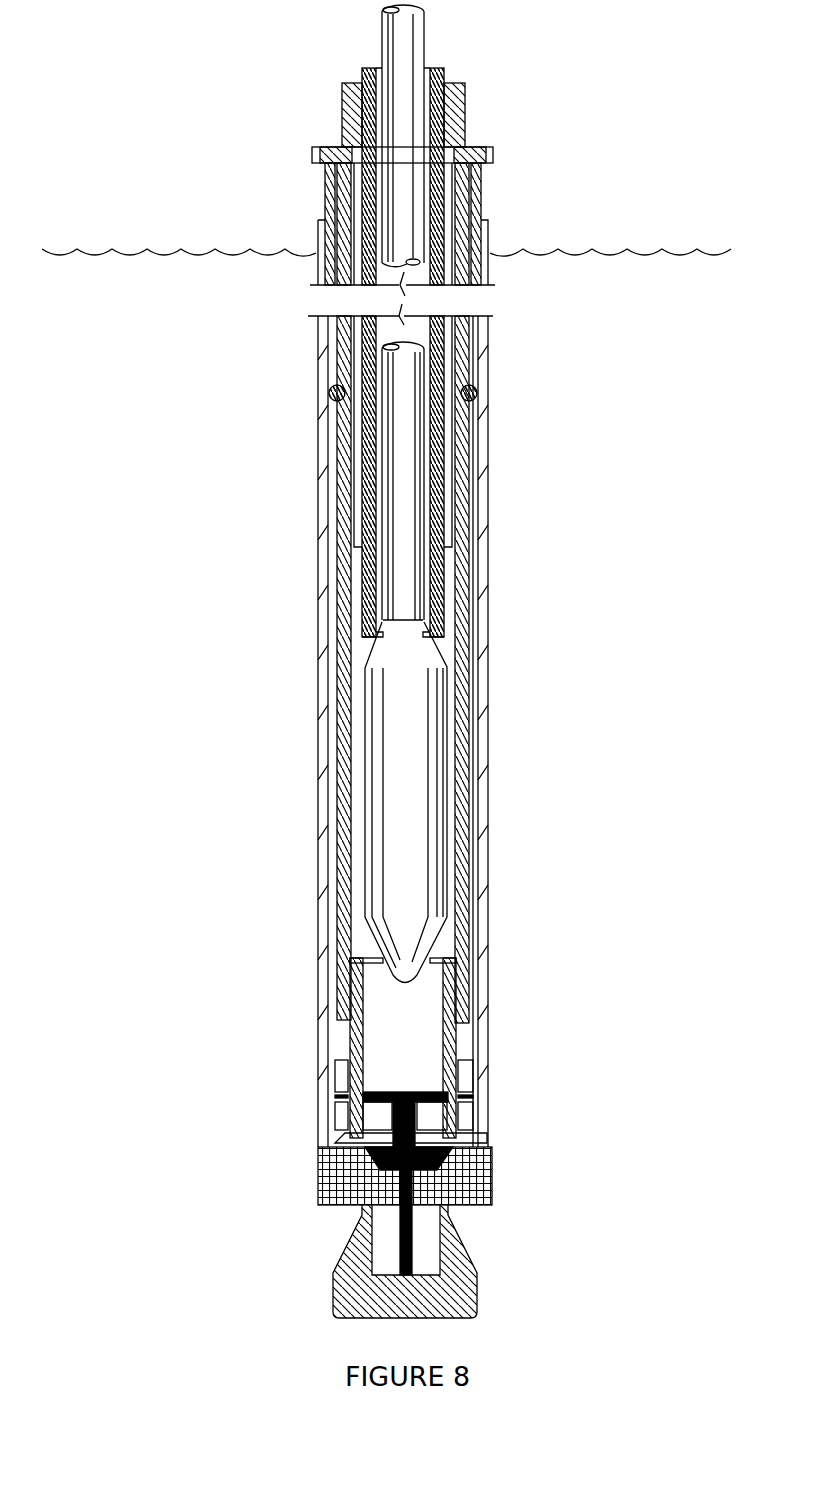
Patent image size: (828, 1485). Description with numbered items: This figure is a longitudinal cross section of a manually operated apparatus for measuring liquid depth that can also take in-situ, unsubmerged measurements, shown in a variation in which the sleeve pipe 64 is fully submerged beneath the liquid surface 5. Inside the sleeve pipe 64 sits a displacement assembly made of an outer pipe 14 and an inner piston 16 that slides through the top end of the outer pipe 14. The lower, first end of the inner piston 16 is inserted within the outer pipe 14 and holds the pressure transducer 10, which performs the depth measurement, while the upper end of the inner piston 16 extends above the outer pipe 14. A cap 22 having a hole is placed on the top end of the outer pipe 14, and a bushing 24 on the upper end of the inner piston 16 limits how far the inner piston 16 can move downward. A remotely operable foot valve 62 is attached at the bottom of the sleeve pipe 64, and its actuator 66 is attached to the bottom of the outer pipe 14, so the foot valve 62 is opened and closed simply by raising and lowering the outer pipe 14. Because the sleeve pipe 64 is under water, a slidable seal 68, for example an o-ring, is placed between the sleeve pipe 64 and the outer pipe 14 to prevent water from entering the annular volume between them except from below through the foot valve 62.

The liquid surface 5 is at (231, 253).
The pressure transducer 10 is at (447, 845).
The outer pipe 14 is at (471, 907).
The inner piston 16 is at (445, 605).
The cap 22 is at (494, 158).
The bushing 24 is at (465, 128).
The foot valve 62 is at (507, 1234).
The sleeve pipe 64 is at (492, 1003).
The actuator 66 is at (490, 1137).
The slidable seal 68 is at (480, 392).